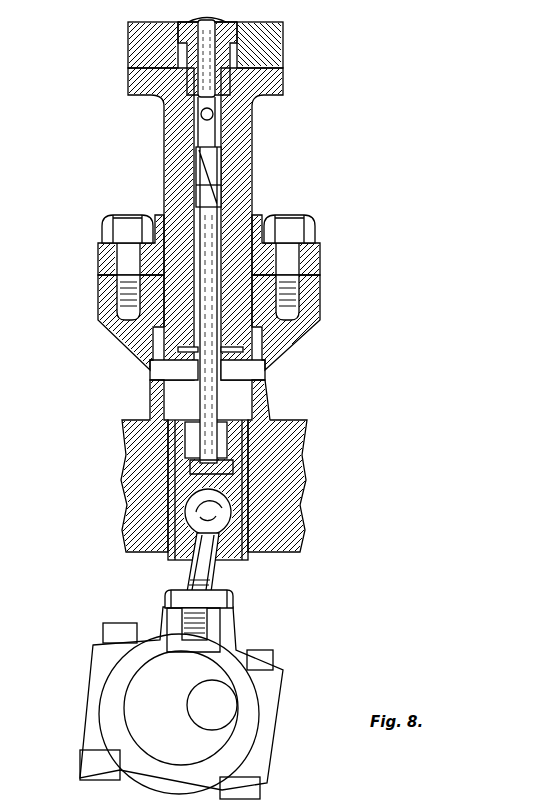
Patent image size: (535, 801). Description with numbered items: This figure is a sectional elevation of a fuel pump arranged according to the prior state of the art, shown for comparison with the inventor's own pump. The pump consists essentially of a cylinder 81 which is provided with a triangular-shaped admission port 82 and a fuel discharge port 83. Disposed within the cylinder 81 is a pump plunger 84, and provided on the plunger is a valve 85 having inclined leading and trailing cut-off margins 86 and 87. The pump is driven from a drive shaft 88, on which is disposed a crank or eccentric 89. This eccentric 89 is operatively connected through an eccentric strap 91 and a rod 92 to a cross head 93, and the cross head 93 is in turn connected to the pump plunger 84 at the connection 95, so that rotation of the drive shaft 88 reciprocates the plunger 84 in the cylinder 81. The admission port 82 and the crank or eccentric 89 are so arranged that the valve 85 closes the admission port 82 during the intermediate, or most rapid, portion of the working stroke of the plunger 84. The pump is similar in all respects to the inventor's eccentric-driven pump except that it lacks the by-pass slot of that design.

The cylinder 81 is at (252, 163).
The admission port 82 is at (221, 155).
The fuel discharge port 83 is at (215, 111).
The pump plunger 84 is at (208, 275).
The valve 85 is at (200, 162).
The leading cut-off margin 86 is at (183, 125).
The trailing cut-off margin 87 is at (197, 192).
The drive shaft 88 is at (237, 697).
The crank or eccentric 89 is at (132, 693).
The eccentric strap 91 is at (100, 652).
The rod 92 is at (218, 577).
The cross head 93 is at (226, 496).
The connection of cross head to plunger 95 is at (253, 442).